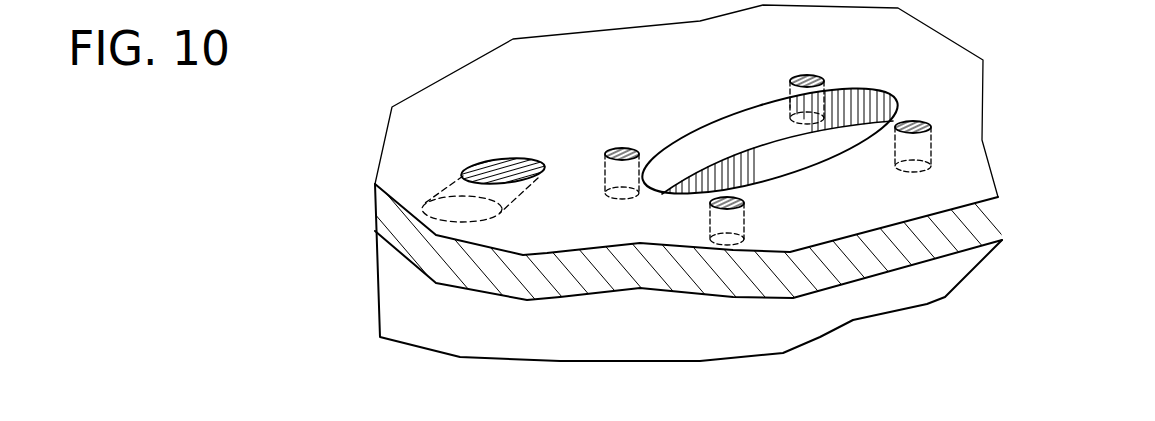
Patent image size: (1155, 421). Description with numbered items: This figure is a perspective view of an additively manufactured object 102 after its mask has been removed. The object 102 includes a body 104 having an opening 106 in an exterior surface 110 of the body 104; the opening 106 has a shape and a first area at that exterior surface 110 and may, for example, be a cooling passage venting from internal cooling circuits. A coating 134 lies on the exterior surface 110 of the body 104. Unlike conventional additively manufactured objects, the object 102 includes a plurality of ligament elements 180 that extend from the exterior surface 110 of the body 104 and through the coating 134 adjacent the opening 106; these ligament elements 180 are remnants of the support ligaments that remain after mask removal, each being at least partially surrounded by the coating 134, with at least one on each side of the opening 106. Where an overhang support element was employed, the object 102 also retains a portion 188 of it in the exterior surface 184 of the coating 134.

The object 102 is at (722, 183).
The body 104 is at (895, 301).
The opening 106 is at (775, 165).
The exterior surface 110 is at (403, 258).
The coating 134 is at (731, 101).
The ligament elements 180 is at (610, 147).
The exterior surface of coating 184 is at (672, 72).
The portion of overhang support element 188 is at (485, 160).